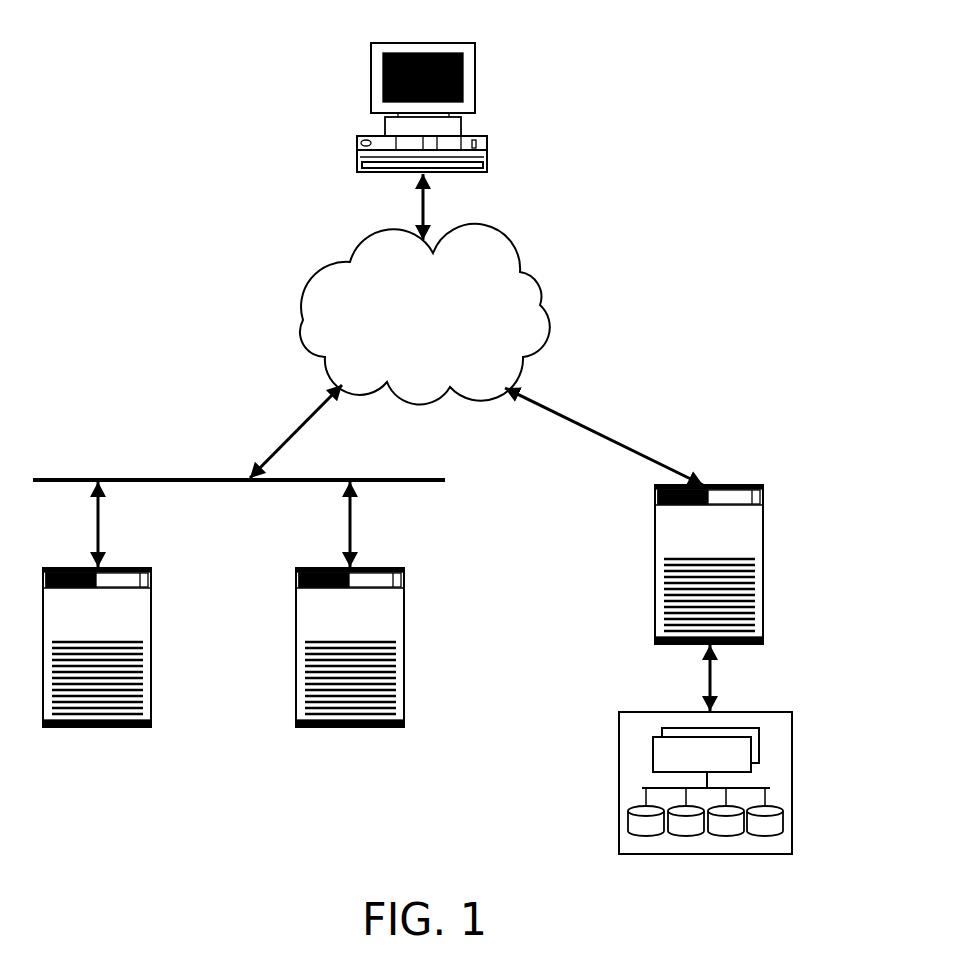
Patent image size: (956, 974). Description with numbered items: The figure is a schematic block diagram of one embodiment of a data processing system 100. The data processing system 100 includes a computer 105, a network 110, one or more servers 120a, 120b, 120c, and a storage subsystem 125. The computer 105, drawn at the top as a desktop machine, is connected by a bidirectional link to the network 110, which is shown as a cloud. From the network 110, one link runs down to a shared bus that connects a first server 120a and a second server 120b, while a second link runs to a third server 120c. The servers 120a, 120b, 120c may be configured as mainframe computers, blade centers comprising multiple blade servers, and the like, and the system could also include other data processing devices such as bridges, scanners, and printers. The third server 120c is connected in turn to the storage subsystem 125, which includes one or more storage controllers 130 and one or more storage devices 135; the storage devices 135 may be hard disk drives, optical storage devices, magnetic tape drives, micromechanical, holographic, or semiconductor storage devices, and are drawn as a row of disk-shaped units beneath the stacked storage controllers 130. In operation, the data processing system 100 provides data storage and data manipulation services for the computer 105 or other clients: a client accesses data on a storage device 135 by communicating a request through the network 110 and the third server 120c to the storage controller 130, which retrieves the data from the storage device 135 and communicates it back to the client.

The data processing system 100 is at (170, 78).
The computer 105 is at (476, 45).
The network 110 is at (442, 352).
The server 120a is at (151, 655).
The server 120b is at (404, 657).
The third server 120c is at (763, 575).
The storage subsystem 125 is at (708, 763).
The storage controller 130 is at (653, 752).
The storage device 135 is at (628, 818).